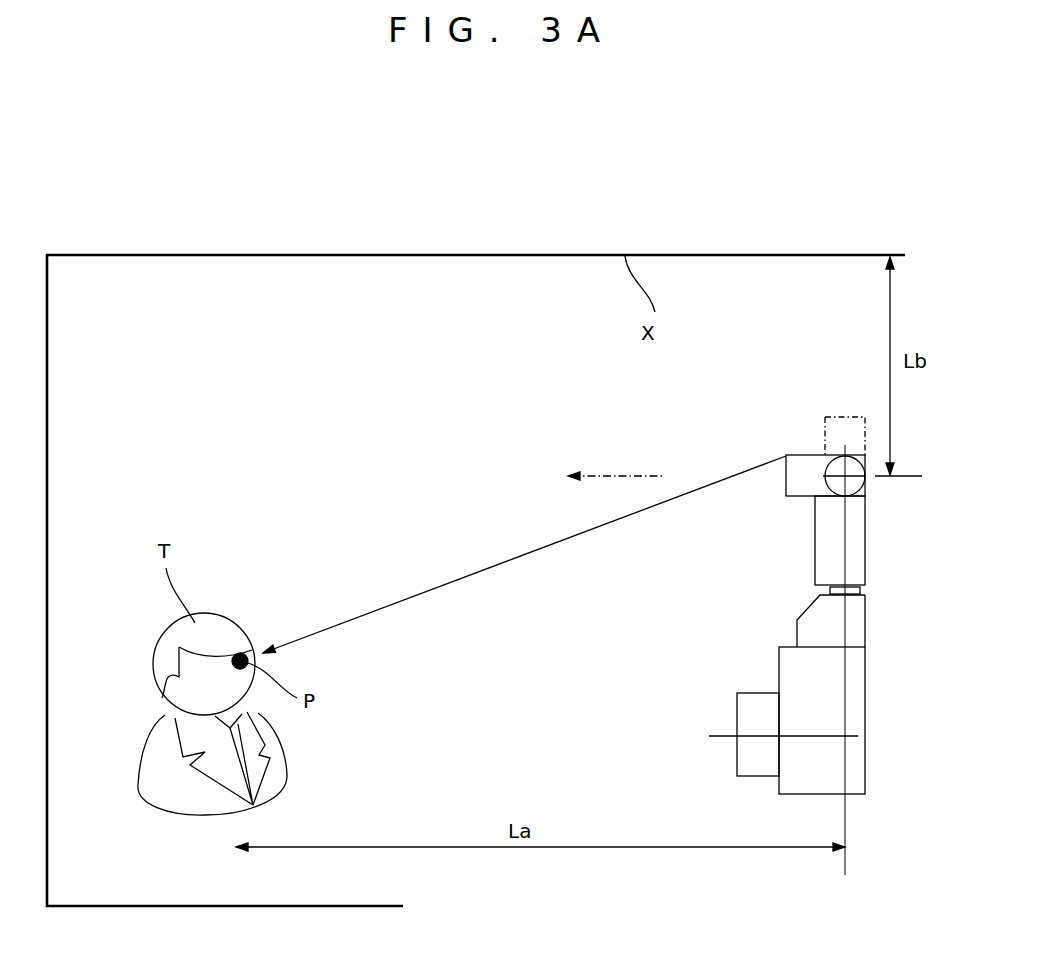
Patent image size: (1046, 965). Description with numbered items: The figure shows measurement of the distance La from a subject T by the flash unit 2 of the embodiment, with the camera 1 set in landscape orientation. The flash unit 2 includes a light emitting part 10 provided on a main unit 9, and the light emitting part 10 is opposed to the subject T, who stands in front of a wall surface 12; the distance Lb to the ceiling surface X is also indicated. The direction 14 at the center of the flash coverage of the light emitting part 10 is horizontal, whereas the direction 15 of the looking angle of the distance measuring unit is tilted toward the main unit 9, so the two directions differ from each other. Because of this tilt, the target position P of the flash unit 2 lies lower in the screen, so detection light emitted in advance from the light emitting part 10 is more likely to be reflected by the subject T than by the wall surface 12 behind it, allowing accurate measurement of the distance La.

The camera 1 is at (852, 697).
The flash unit 2 is at (870, 565).
The main unit 9 is at (855, 537).
The light emitting part 10 is at (800, 462).
The wall surface 12 is at (47, 432).
The direction at the center of the flash coverage 14 is at (614, 475).
The direction of the looking angle 15 is at (551, 551).